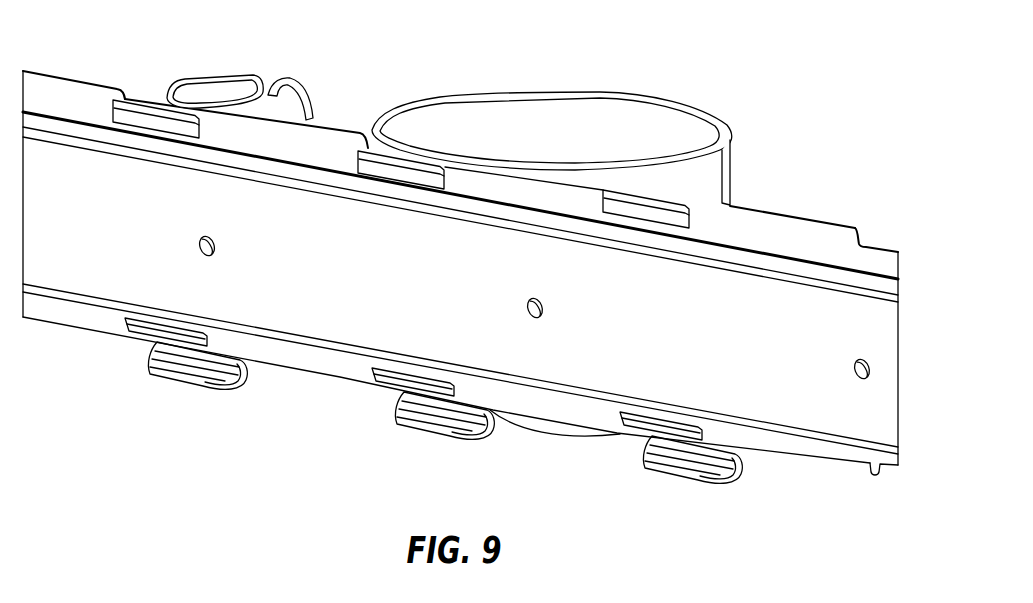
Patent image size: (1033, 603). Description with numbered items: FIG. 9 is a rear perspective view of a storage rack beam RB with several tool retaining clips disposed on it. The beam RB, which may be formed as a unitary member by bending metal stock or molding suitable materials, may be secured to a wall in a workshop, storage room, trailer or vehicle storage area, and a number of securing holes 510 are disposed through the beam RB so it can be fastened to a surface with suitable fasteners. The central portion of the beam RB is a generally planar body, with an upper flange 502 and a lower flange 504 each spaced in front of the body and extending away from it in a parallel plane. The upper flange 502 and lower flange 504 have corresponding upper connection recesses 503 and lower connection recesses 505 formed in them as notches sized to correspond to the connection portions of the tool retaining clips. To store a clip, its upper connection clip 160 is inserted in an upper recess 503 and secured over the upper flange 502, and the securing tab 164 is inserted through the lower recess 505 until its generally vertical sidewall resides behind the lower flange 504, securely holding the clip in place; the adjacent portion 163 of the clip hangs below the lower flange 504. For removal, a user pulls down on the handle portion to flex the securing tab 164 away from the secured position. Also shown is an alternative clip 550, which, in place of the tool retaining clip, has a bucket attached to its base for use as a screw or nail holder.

The upper connection clip 160 is at (393, 169).
The snap hook body 163 is at (413, 428).
The securing tab 164 is at (397, 378).
The upper flange 502 is at (72, 98).
The upper connection recess 503 is at (876, 231).
The lower flange 504 is at (783, 450).
The lower connection recess 505 is at (882, 475).
The securing hole 510 is at (222, 257).
The clip 550 is at (583, 130).
The beam RB is at (460, 233).